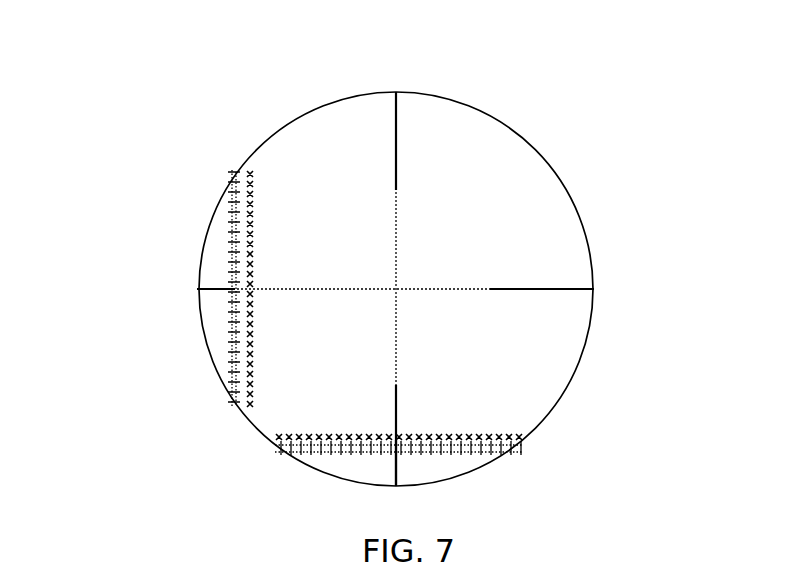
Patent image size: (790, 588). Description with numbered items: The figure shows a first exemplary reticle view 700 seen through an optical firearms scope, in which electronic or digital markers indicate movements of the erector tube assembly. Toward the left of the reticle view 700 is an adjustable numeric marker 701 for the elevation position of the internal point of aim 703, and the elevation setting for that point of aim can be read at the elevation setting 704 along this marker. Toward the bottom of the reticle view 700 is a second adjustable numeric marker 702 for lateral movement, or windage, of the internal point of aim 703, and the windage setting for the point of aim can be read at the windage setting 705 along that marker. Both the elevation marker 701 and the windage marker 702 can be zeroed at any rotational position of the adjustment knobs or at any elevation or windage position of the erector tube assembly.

The reticle view 700 is at (225, 102).
The adjustable numeric marker for elevation 701 is at (225, 390).
The adjustable numeric marker for windage 702 is at (507, 452).
The internal point of aim 703 is at (402, 282).
The elevation setting 704 is at (228, 285).
The windage setting 705 is at (397, 453).